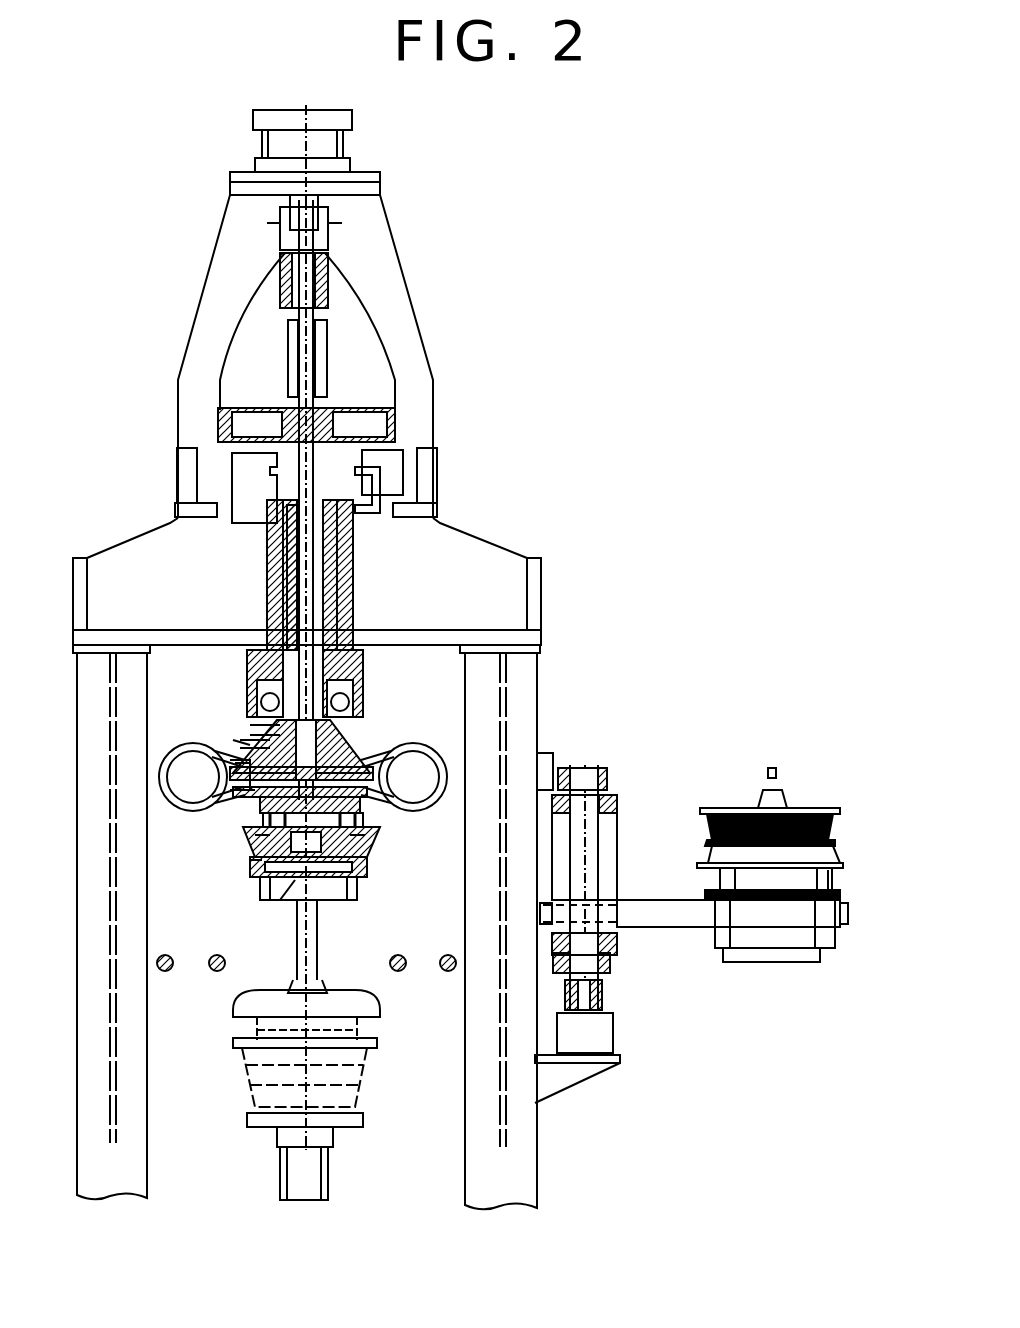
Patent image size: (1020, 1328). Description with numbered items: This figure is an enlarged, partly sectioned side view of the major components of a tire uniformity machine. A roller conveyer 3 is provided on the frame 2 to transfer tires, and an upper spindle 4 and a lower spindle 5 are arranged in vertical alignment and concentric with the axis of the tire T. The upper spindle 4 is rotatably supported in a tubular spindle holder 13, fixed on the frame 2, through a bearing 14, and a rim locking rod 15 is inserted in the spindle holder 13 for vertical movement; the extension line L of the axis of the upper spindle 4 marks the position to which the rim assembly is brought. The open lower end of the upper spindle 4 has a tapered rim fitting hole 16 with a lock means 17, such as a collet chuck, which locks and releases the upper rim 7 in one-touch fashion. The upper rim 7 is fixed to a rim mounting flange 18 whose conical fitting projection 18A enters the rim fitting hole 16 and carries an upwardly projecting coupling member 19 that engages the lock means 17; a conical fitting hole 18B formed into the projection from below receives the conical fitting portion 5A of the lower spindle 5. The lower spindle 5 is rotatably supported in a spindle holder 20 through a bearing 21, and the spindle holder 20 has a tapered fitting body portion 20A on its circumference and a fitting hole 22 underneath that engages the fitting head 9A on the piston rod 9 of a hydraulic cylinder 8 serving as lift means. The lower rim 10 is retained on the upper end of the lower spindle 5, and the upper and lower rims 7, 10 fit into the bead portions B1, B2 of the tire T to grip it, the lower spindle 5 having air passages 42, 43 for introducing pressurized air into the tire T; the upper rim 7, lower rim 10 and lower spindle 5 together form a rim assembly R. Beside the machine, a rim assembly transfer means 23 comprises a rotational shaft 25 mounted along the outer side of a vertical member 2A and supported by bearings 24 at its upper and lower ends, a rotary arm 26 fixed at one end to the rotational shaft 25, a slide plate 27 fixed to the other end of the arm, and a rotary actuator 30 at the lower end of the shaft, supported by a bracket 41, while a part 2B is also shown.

The frame 2 is at (130, 548).
The vertical member 2A is at (140, 1100).
The bracket 2B is at (830, 912).
The roller conveyer 3 is at (168, 971).
The upper spindle 4 is at (338, 580).
The lower spindle 5 is at (252, 840).
The conical fitting portion 5A is at (235, 740).
The upper rim 7 is at (400, 742).
The hydraulic cylinder 8 is at (318, 1188).
The piston rod 9 is at (318, 956).
The fitting head 9A is at (330, 893).
The lower rim 10 is at (370, 825).
The tubular spindle holder 13 is at (340, 610).
The bearing 14 is at (238, 668).
The rim locking rod 15 is at (313, 370).
The tapered rim fitting hole 16 is at (355, 740).
The lock means 17 is at (352, 668).
The rim mounting flange 18 is at (372, 772).
The conical fitting projection 18A is at (270, 730).
The fitting hole 18B is at (250, 740).
The coupling member 19 is at (340, 720).
The spindle holder 20 is at (245, 820).
The tapered fitting body portion 20A is at (248, 860).
The bearing 21 is at (368, 845).
The fitting hole 22 is at (288, 902).
The rim assembly transfer means 23 is at (638, 836).
The bearings 24 is at (603, 784).
The rotational shaft 25 is at (590, 875).
The rotary arm 26 is at (618, 938).
The slide plate 27 is at (640, 920).
The rotary actuator 30 is at (605, 1048).
The bracket 41 is at (578, 1080).
The air passage 42 is at (372, 750).
The air passage 43 is at (370, 798).
The bead portion B1 is at (235, 770).
The bead portion B2 is at (240, 792).
The extension line L is at (300, 557).
The rim assembly R is at (250, 890).
The tire T is at (445, 758).